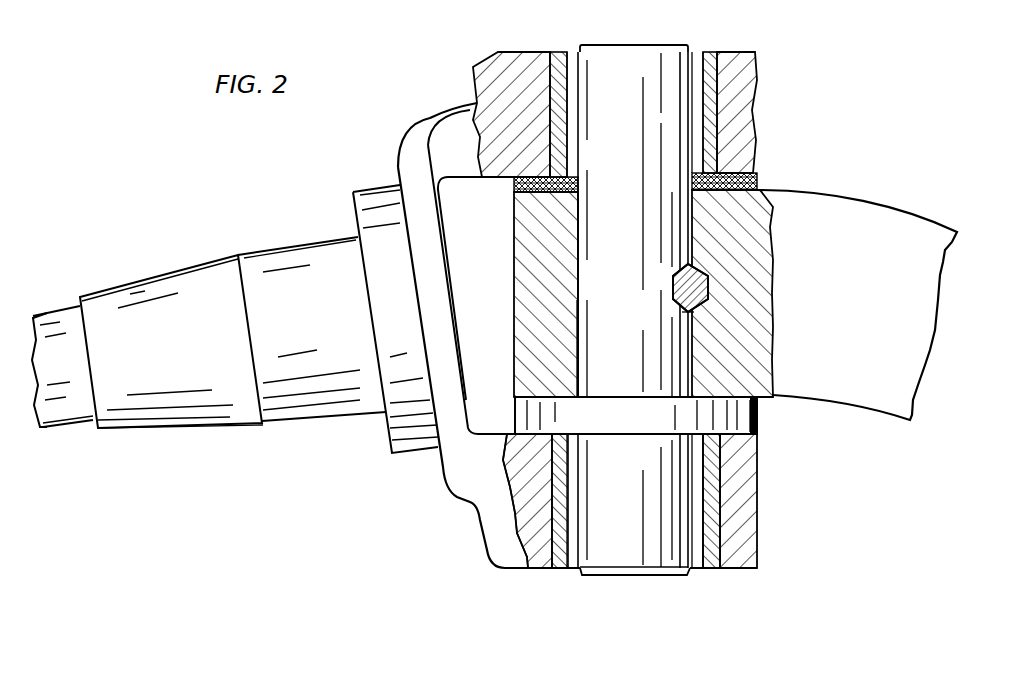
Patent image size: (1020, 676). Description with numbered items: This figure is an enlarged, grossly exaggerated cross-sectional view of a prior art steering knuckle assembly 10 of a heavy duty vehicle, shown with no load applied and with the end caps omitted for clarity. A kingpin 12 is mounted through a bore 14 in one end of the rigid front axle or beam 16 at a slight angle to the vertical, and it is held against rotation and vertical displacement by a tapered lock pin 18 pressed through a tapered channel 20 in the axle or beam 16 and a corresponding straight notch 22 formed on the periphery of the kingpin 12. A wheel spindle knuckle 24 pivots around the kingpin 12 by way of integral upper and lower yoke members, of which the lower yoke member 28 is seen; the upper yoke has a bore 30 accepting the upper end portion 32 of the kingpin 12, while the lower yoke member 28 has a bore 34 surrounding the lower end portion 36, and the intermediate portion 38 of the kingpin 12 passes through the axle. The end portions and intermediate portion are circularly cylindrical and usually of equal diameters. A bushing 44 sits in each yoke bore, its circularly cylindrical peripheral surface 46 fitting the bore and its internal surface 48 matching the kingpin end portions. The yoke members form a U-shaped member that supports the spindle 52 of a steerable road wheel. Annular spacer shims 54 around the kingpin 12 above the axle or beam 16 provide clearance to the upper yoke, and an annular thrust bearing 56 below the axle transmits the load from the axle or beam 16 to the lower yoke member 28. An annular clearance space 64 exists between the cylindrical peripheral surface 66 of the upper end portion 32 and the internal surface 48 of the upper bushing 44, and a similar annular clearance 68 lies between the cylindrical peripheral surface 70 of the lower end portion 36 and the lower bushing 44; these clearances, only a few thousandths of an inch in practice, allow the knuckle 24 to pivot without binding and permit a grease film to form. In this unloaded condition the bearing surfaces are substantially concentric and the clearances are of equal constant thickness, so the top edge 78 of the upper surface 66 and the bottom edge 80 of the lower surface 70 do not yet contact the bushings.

The steering knuckle assembly 10 is at (357, 172).
The kingpin 12 is at (576, 351).
The bore 14 is at (582, 302).
The front axle or beam 16 is at (874, 400).
The tapered lock pin 18 is at (684, 313).
The tapered channel 20 is at (701, 292).
The straight notch 22 is at (673, 293).
The wheel spindle knuckle 24 is at (408, 128).
The lower yoke member 28 is at (538, 568).
The bore 30 is at (556, 106).
The upper end portion 32 is at (632, 70).
The bore 34 is at (560, 484).
The lower end portion 36 is at (650, 567).
The intermediate portion 38 is at (591, 237).
The bushing 44 is at (546, 146).
The peripheral surface 46 is at (732, 104).
The internal surface 48 is at (568, 136).
The spindle 52 is at (232, 420).
The annular spacer shims 54 is at (512, 180).
The thrust bearing 56 is at (522, 410).
The annular clearance space 64 is at (694, 64).
The cylindrical peripheral surface 66 is at (694, 81).
The annular clearance 68 is at (573, 568).
The cylindrical peripheral surface 70 is at (712, 568).
The top edge 78 is at (609, 45).
The bottom edge 80 is at (620, 577).